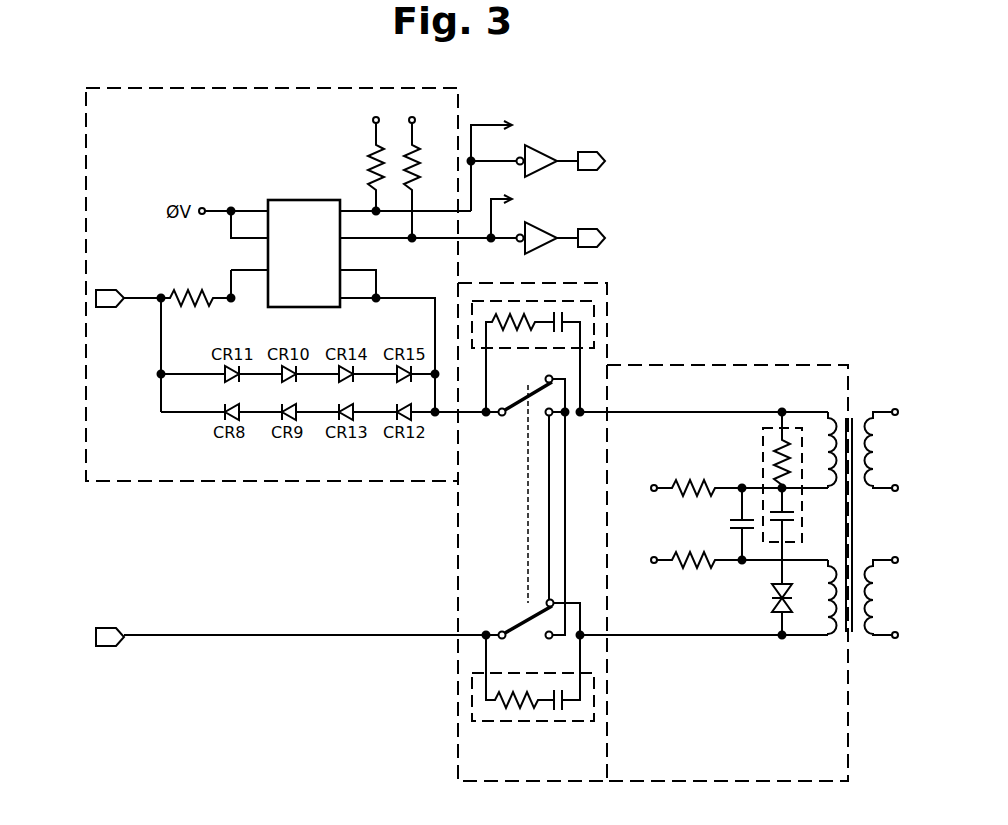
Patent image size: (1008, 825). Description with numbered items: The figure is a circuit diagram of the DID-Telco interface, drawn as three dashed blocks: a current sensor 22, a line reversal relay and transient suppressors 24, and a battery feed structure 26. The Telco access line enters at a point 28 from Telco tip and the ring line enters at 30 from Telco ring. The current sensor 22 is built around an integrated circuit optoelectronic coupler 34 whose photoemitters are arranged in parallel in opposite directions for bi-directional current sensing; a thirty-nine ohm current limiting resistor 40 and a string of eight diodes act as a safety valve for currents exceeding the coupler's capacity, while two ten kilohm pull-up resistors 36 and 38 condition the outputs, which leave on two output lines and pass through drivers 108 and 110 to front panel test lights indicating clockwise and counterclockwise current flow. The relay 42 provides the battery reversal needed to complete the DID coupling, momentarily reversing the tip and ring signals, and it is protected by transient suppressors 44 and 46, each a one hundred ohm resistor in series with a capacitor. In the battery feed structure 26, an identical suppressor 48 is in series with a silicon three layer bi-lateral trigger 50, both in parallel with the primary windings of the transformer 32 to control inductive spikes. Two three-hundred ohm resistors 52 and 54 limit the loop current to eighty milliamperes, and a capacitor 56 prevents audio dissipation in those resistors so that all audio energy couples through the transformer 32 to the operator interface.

The current sensor 22 is at (144, 482).
The line reversal relay and transient suppressors 24 is at (458, 734).
The battery feed structure 26 is at (851, 739).
The access line point (from Telco tip) 28 is at (104, 290).
The ring line (from Telco ring) 30 is at (111, 628).
The transformer 32 is at (869, 402).
The integrated circuit optoelectronic coupler 34 is at (293, 200).
The pull-up resistor 36 is at (366, 152).
The pull-up resistor 38 is at (416, 152).
The current limiting resistor 40 is at (186, 298).
The relay 42 is at (519, 392).
The transient suppressor 44 is at (594, 301).
The transient suppressor 46 is at (472, 699).
The suppressor 48 is at (763, 446).
The silicon three layer bi-lateral trigger 50 is at (772, 598).
The resistor 52 is at (706, 487).
The resistor 54 is at (710, 566).
The capacitor 56 is at (734, 524).
The driver 108 is at (548, 157).
The driver 110 is at (548, 234).